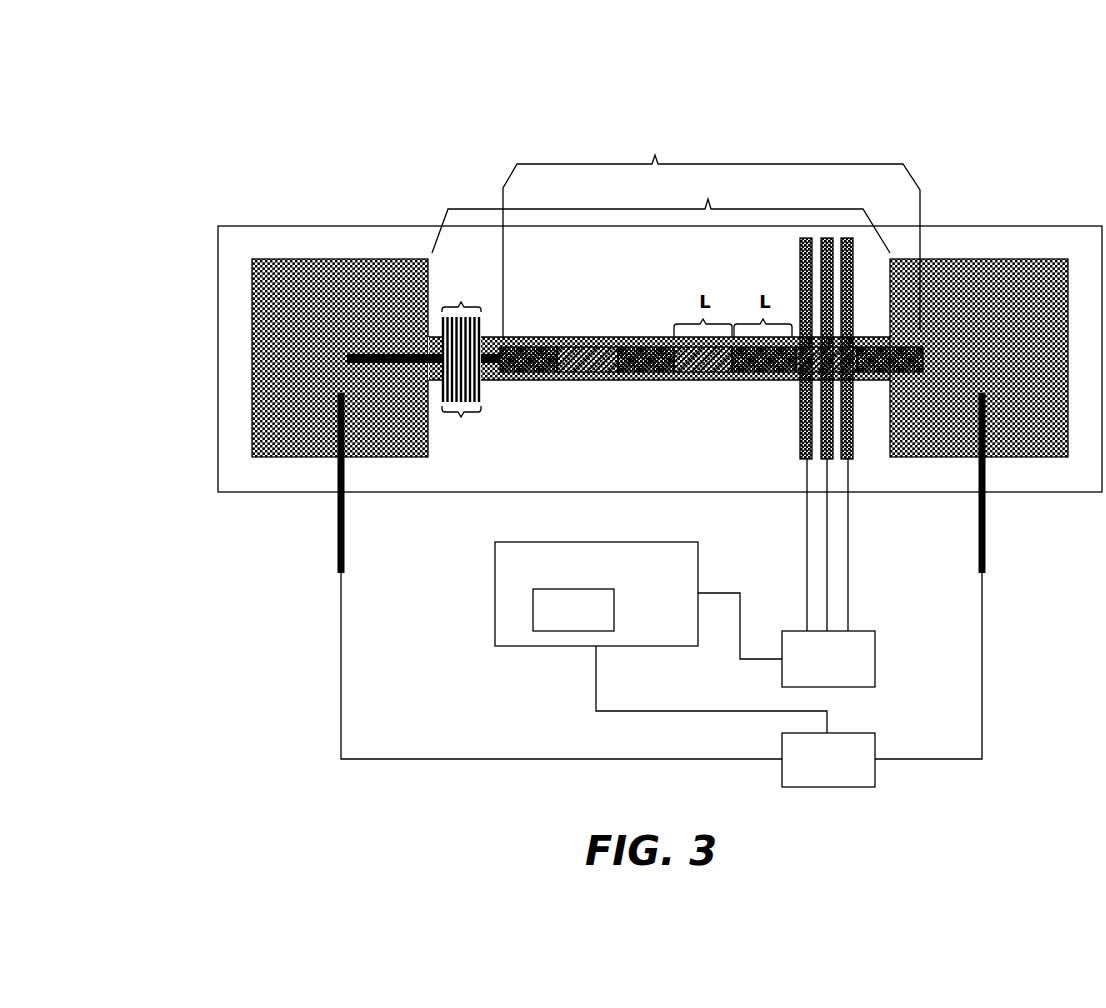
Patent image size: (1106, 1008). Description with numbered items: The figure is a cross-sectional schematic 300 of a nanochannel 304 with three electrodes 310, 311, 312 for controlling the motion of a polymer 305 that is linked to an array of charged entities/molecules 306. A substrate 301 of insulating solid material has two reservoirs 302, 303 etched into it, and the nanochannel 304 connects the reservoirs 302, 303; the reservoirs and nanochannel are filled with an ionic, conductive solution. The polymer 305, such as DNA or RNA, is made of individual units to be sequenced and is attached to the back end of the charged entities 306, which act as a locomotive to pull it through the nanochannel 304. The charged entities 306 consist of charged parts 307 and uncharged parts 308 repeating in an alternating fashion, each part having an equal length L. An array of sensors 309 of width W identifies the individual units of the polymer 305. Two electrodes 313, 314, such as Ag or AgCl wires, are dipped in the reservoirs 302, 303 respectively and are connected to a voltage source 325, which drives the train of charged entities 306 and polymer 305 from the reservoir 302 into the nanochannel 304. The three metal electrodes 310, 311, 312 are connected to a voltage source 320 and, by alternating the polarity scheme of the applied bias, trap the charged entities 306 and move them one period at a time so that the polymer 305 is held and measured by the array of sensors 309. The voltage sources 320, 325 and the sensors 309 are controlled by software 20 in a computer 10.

The cross-sectional schematic 300 is at (756, 132).
The substrate 301 is at (233, 233).
The reservoir 302 is at (338, 268).
The reservoir 303 is at (985, 265).
The nanochannel 304 is at (661, 212).
The polymer 305 is at (490, 340).
The array of charged entities/molecules 306 is at (711, 232).
The charged part 307 is at (592, 375).
The uncharged part 308 is at (650, 375).
The array of sensors 309 is at (462, 303).
The electrode 310 is at (800, 449).
The electrode 311 is at (826, 458).
The electrode 312 is at (853, 450).
The electrode 313 is at (337, 527).
The electrode 314 is at (985, 520).
The voltage source 320 is at (808, 670).
The voltage source 325 is at (808, 772).
The computer 10 is at (652, 577).
The software 20 is at (560, 623).